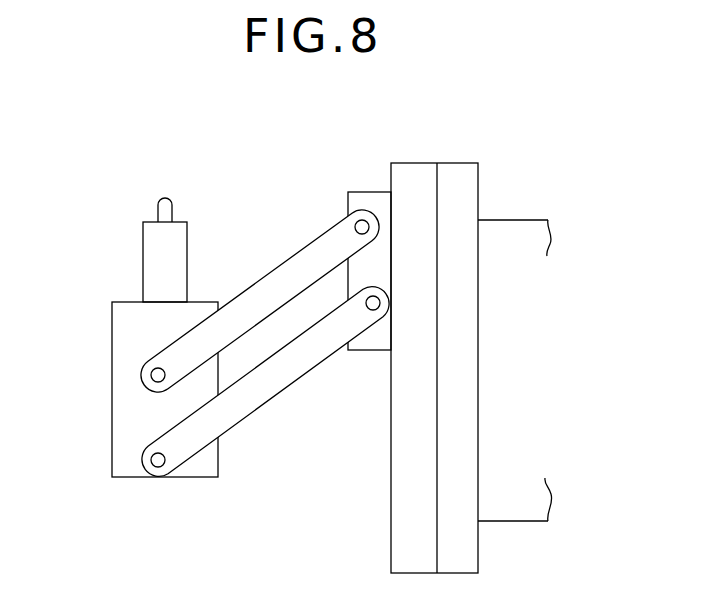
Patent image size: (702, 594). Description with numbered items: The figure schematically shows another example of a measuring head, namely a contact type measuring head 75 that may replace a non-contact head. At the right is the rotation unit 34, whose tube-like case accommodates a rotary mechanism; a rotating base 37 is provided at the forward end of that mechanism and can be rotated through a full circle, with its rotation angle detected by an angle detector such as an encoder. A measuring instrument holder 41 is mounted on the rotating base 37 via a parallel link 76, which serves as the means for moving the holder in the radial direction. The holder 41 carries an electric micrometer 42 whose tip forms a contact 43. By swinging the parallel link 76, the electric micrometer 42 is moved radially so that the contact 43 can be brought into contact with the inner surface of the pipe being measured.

The contact type measuring head 75 is at (199, 126).
The parallel link 76 is at (300, 252).
The contact 43 is at (174, 212).
The electric micrometer 42 is at (143, 248).
The measuring instrument holder 41 is at (112, 388).
The rotating base 37 is at (423, 163).
The rotation unit 34 is at (519, 219).